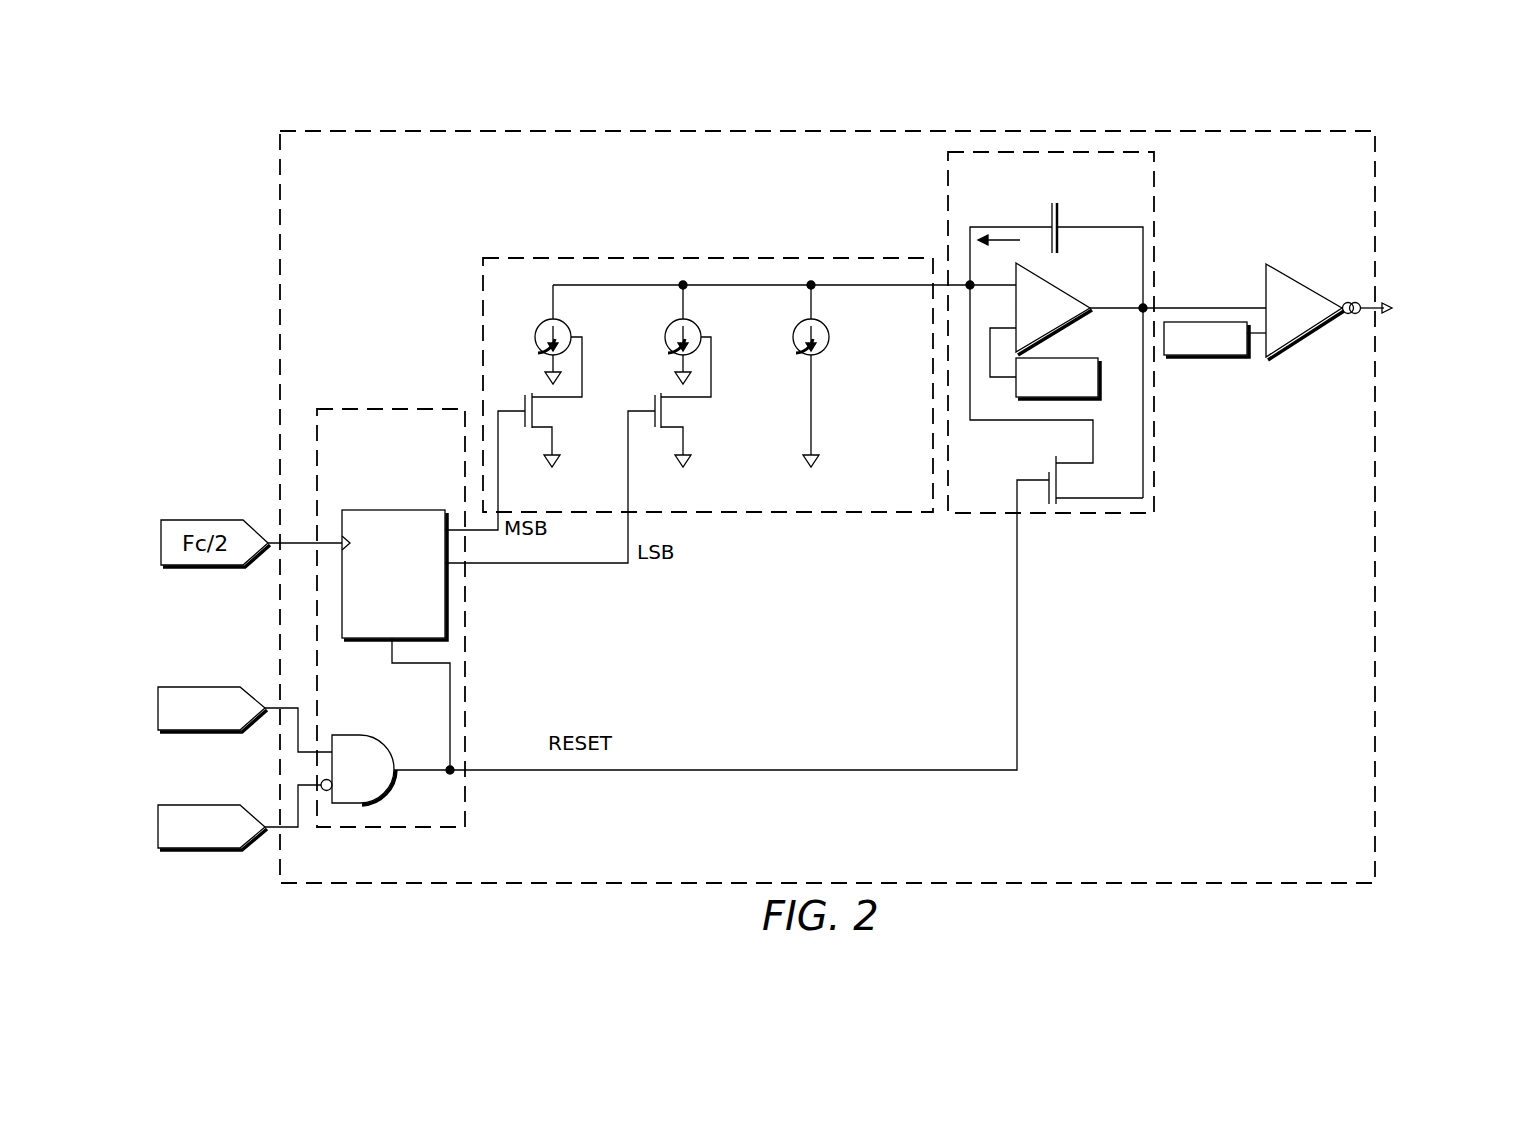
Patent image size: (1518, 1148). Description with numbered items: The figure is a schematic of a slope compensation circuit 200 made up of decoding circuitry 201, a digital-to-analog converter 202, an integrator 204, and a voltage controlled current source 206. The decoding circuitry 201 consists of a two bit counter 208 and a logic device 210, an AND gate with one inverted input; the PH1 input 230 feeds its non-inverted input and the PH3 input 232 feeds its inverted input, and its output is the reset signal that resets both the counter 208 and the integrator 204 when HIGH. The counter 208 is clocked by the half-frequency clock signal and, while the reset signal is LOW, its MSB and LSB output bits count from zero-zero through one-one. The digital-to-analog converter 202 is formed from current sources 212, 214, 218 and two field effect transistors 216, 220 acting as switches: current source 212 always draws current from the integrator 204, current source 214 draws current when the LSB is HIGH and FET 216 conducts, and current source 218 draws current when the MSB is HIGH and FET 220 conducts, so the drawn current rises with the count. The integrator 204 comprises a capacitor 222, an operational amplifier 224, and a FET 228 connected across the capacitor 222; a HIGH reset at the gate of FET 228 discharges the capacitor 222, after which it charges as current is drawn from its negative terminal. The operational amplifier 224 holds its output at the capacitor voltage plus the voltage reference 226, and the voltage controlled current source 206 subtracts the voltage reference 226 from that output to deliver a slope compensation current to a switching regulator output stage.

The slope compensation circuit 200 is at (500, 131).
The decoding circuitry 201 is at (355, 409).
The digital-to-analog converter 202 is at (686, 258).
The integrator 204 is at (1155, 222).
The voltage controlled current source 206 is at (1308, 288).
The two bit counter 208 is at (356, 510).
The logic device 210 is at (368, 740).
The current source 212 is at (825, 326).
The current source 214 is at (696, 326).
The field effect transistor 216 is at (657, 393).
The current source 218 is at (566, 326).
The field effect transistor 220 is at (532, 393).
The capacitor 222 is at (1060, 205).
The operational amplifier 224 is at (1053, 285).
The voltage reference 226 is at (1068, 358).
The field effect transistor 228 is at (1050, 458).
The PH1 input 230 is at (195, 694).
The PH3 input 232 is at (195, 811).